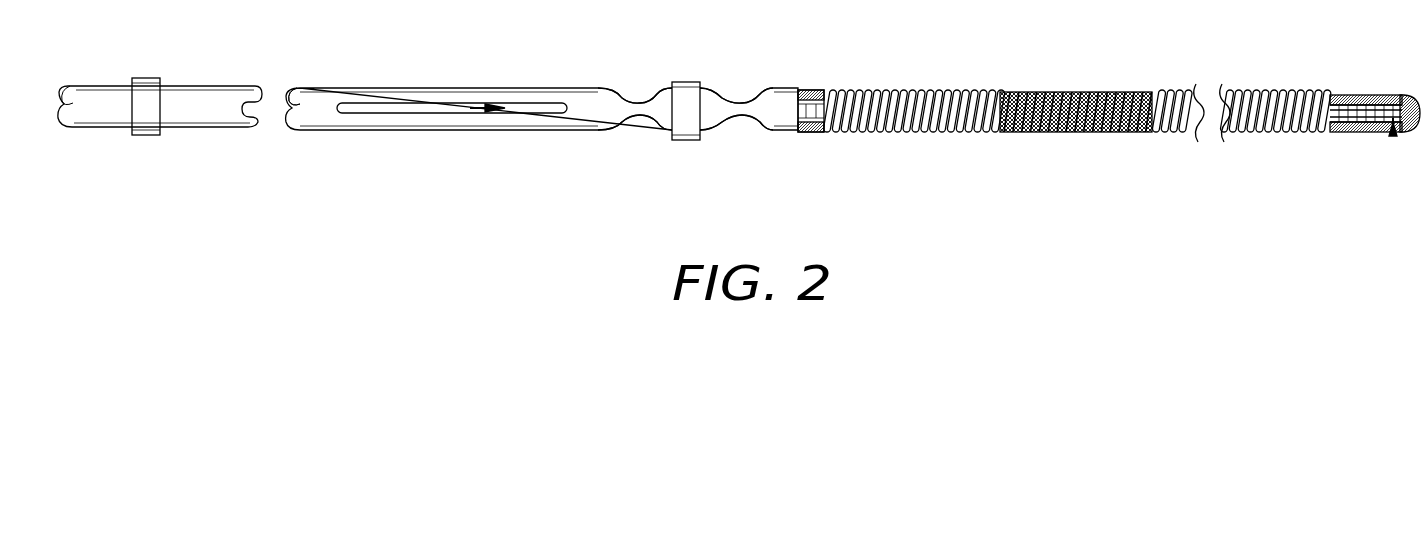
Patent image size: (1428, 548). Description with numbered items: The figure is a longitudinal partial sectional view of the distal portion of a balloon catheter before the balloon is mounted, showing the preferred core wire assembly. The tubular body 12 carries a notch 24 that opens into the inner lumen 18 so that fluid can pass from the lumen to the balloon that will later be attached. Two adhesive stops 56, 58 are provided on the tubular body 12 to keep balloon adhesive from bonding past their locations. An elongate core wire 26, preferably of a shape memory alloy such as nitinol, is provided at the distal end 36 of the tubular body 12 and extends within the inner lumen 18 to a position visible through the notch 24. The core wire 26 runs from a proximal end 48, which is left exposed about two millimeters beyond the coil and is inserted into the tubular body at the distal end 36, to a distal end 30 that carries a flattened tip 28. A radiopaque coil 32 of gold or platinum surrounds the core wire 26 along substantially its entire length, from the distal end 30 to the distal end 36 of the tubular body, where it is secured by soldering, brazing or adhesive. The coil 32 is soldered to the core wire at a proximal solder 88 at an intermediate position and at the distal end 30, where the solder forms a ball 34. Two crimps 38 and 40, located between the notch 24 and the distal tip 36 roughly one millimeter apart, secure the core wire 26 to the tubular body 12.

The tubular body 12 is at (550, 88).
The inner lumen 18 is at (290, 95).
The notch 24 is at (440, 105).
The core wire 26 is at (812, 108).
The flattened tip 28 is at (1362, 95).
The distal end 30 is at (1393, 135).
The coil 32 is at (895, 130).
The ball 34 is at (1420, 103).
The distal end 36 is at (798, 78).
The crimp 38 is at (627, 115).
The crimp 40 is at (745, 117).
The proximal end 48 is at (485, 108).
The adhesive stop 56 is at (146, 78).
The adhesive stop 58 is at (686, 82).
The proximal solder 88 is at (1070, 92).